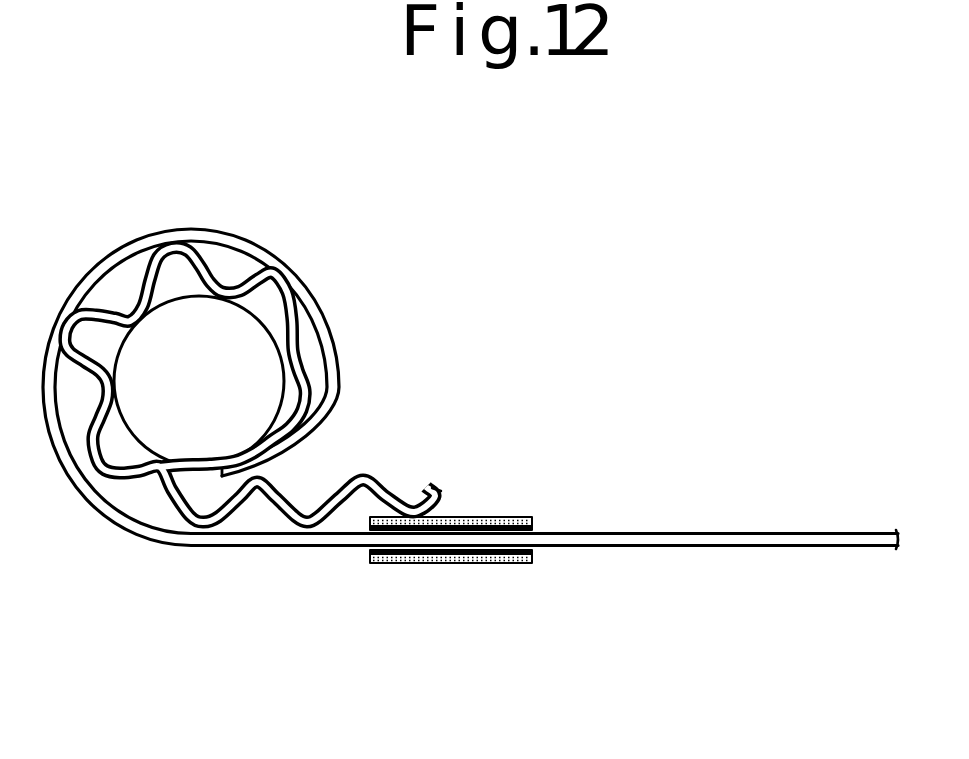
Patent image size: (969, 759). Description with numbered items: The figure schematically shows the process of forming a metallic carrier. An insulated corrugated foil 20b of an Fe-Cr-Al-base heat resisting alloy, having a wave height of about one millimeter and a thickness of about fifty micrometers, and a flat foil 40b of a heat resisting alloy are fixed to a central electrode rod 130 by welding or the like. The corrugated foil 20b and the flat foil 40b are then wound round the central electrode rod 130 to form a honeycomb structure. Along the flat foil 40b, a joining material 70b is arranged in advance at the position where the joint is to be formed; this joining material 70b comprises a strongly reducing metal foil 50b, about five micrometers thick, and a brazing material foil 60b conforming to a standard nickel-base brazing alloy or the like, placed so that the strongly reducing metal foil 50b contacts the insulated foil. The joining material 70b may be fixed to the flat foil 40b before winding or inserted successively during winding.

The flat foil 40b is at (262, 244).
The insulated corrugated foil 20b is at (300, 314).
The central electrode rod 130 is at (282, 397).
The strongly reducing metal foil 50b is at (521, 517).
The brazing material foil 60b is at (534, 531).
The joining material 70b is at (625, 402).